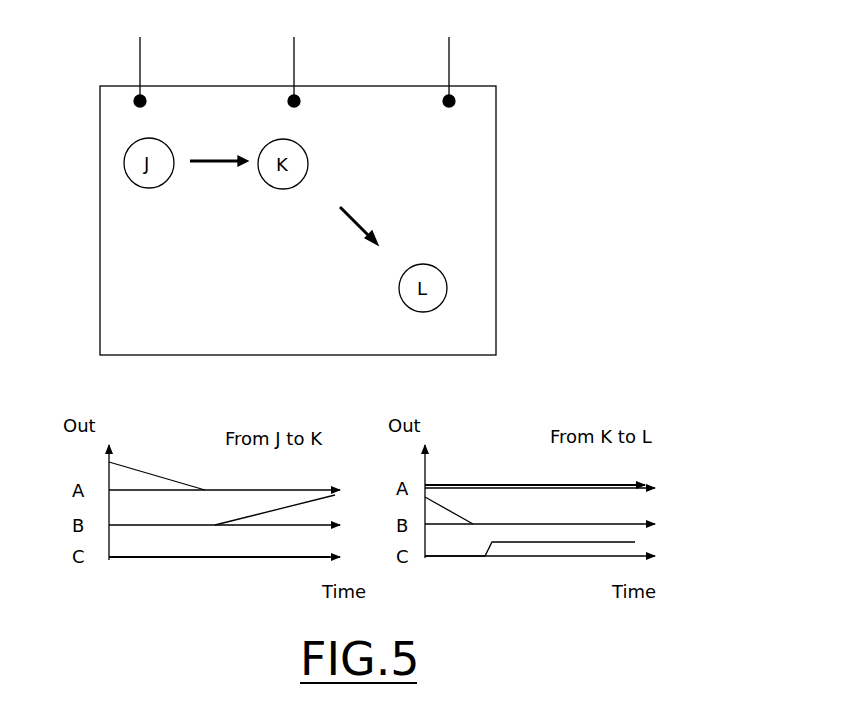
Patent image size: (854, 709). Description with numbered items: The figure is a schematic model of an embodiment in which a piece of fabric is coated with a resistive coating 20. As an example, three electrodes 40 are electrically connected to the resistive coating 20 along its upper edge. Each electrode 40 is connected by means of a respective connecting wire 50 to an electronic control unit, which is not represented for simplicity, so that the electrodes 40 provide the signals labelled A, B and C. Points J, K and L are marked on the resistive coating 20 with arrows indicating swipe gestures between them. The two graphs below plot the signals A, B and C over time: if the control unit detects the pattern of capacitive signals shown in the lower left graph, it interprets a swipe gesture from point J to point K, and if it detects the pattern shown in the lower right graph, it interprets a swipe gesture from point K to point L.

The resistive coating 20 is at (457, 175).
The electrode 40 is at (136, 98).
The connecting wire 50 is at (142, 64).